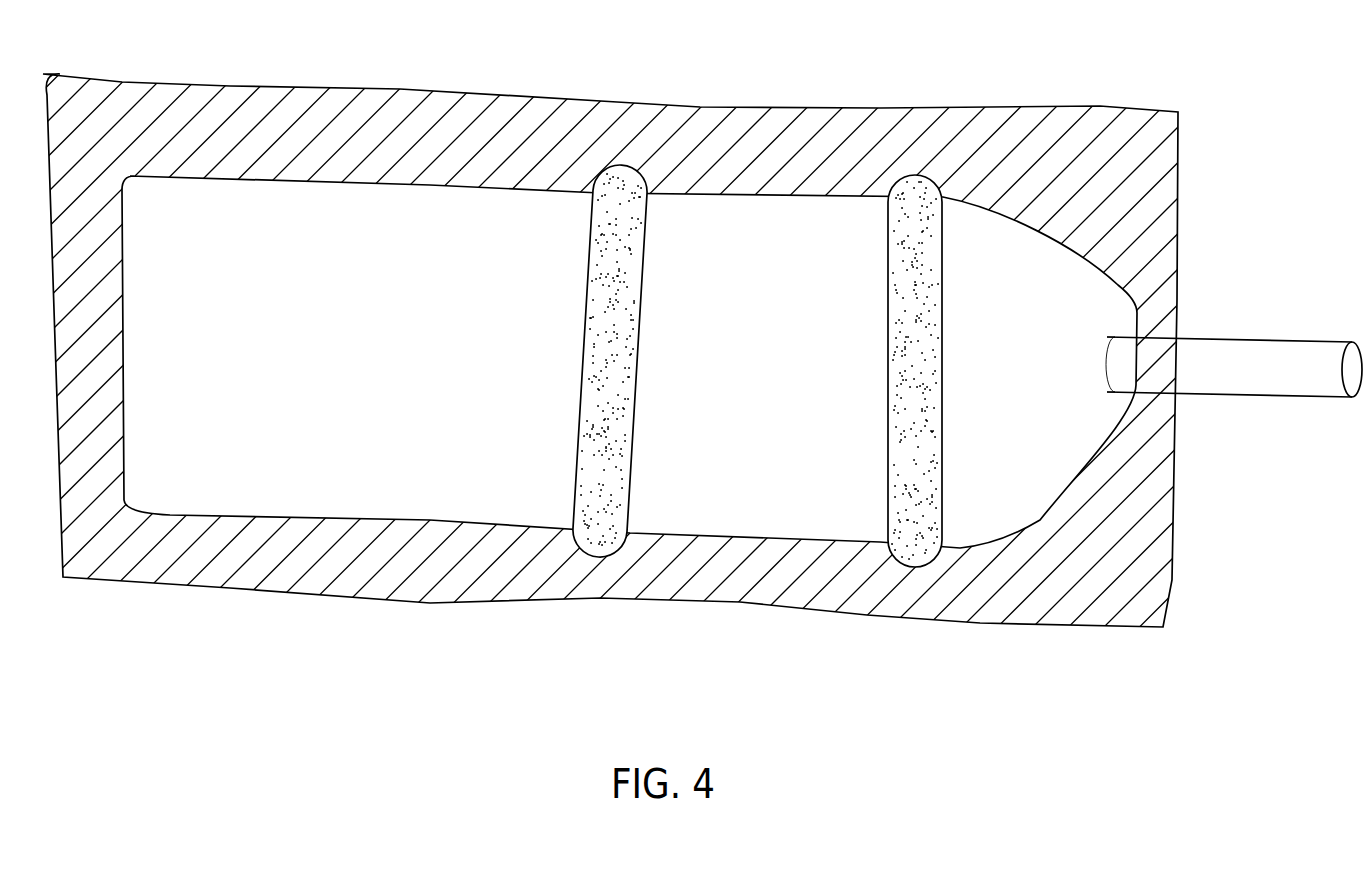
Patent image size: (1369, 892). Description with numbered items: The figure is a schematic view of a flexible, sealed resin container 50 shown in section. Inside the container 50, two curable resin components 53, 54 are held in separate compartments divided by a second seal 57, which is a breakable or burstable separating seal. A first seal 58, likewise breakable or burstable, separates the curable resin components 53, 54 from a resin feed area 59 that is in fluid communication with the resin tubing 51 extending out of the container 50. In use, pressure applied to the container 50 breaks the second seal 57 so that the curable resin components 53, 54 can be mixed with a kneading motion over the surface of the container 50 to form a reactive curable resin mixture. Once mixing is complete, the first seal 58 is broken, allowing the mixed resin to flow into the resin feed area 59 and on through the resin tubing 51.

The flexible, sealed resin container 50 is at (640, 659).
The resin tubing 51 is at (1280, 398).
The curable resin component 53 is at (391, 459).
The curable resin component 54 is at (701, 459).
The second seal 57 is at (597, 268).
The first seal 58 is at (906, 270).
The resin feed area 59 is at (1011, 459).